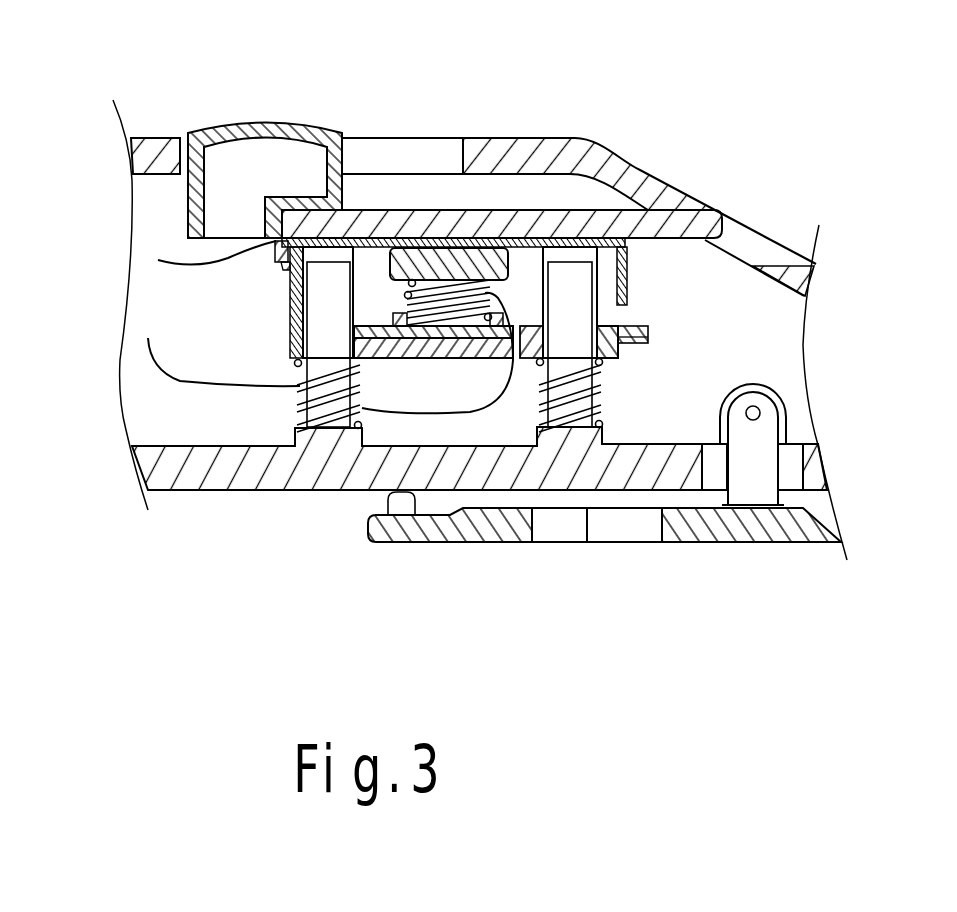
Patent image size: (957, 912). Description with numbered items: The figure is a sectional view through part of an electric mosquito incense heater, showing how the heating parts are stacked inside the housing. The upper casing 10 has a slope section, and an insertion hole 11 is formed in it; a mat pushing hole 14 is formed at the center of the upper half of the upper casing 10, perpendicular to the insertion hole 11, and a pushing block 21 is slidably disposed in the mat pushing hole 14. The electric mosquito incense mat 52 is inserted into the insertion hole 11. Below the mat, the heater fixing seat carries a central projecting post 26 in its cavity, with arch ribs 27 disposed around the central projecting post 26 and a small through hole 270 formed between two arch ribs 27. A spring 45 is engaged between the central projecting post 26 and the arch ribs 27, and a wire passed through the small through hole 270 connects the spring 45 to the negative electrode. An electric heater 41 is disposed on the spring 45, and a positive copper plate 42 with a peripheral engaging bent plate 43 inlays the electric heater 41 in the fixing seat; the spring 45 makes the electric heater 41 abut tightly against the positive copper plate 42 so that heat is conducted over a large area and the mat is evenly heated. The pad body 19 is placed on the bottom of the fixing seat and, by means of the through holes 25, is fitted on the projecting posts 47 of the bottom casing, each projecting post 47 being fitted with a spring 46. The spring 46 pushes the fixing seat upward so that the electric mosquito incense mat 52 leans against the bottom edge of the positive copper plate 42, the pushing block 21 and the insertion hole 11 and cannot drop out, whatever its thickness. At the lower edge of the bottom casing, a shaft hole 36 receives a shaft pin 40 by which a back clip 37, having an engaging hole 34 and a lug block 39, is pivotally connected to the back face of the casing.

The upper casing 10 is at (573, 152).
The insertion hole 11 is at (743, 233).
The mat pushing hole 14 is at (448, 150).
The pad body 19 is at (610, 357).
The pushing block 21 is at (237, 123).
The through holes 25 is at (290, 275).
The central projecting post 26 is at (462, 326).
The arch ribs 27 is at (497, 318).
The engaging hole 34 is at (612, 533).
The shaft hole 36 is at (790, 457).
The back clip 37 is at (452, 532).
The lug block 39 is at (767, 473).
The shaft pin 40 is at (758, 410).
The electric heater 41 is at (440, 257).
The positive copper plate 42 is at (623, 255).
The engaging bent plate 43 is at (633, 347).
The spring 45 is at (427, 307).
The spring 46 is at (298, 401).
The projecting posts 47 is at (318, 327).
The electric mosquito incense mat 52 is at (600, 226).
The small through hole 270 is at (533, 325).